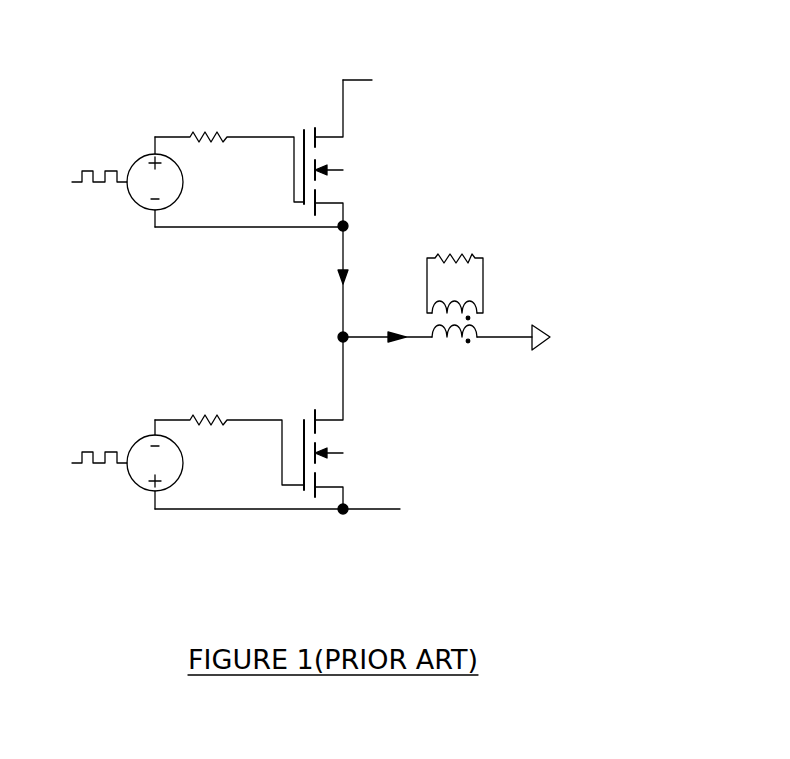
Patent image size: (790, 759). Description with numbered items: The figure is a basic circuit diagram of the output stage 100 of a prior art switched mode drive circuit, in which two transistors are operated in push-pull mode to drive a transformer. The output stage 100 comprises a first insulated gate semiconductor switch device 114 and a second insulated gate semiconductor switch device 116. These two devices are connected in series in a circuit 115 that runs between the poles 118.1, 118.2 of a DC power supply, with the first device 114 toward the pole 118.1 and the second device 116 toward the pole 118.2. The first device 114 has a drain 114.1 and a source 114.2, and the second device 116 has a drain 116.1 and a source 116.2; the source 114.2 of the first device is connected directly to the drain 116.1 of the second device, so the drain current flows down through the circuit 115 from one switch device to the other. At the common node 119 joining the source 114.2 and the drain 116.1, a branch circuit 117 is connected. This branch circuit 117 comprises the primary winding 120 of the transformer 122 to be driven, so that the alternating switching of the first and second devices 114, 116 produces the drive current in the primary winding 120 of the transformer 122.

The output stage of a switched mode drive circuit 100 is at (516, 47).
The first insulated gate semiconductor switch device 114 is at (376, 147).
The drain of first transistor 114.1 is at (331, 134).
The source of the first device 114.2 is at (330, 202).
The circuit 115 is at (343, 262).
The second insulated gate semiconductor switch device 116 is at (372, 431).
The drain of the second device 116.1 is at (328, 418).
The source of second transistor 116.2 is at (345, 495).
The branch circuit 117 is at (386, 339).
The pole of the DC power supply 118.1 is at (358, 80).
The pole of the DC power supply 118.2 is at (370, 512).
The common node 119 is at (340, 336).
The primary winding 120 is at (478, 333).
The transformer 122 is at (560, 322).